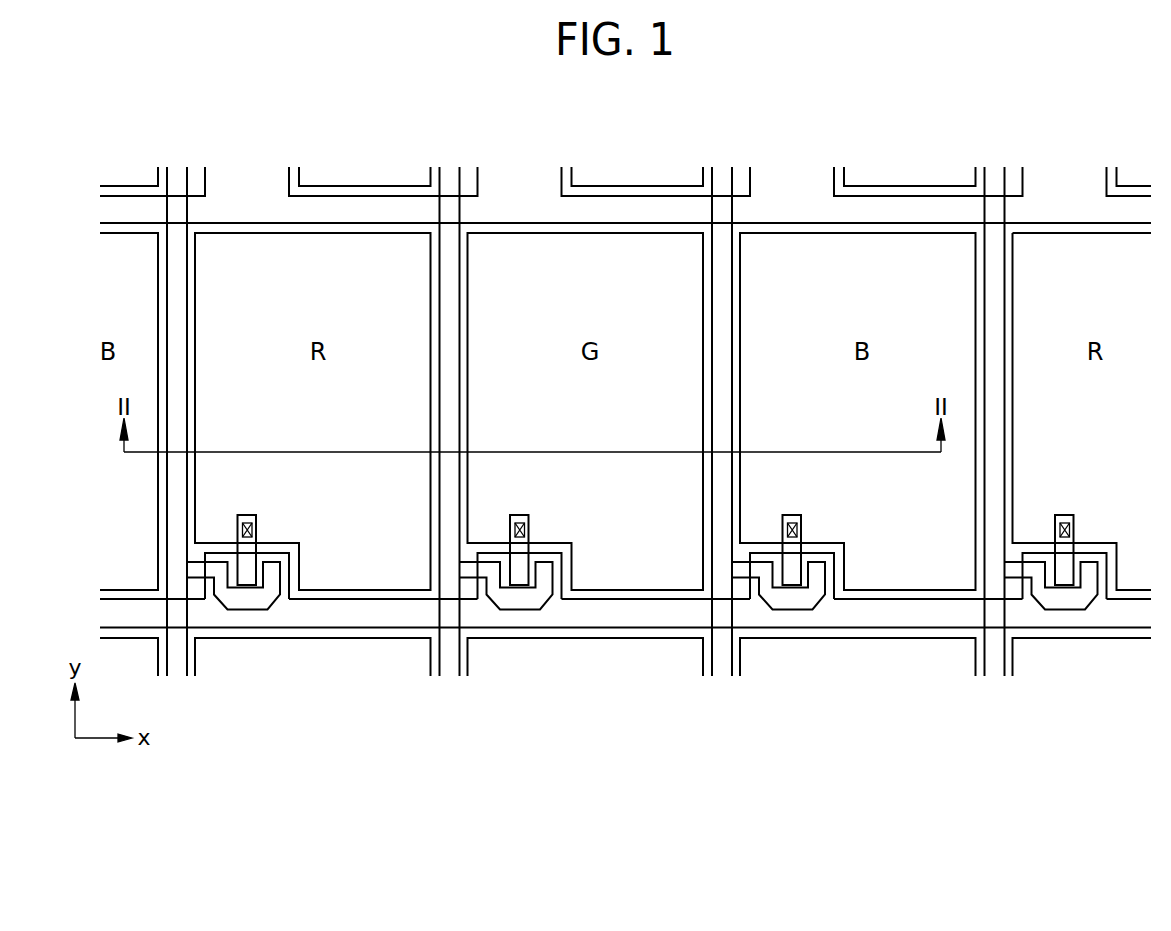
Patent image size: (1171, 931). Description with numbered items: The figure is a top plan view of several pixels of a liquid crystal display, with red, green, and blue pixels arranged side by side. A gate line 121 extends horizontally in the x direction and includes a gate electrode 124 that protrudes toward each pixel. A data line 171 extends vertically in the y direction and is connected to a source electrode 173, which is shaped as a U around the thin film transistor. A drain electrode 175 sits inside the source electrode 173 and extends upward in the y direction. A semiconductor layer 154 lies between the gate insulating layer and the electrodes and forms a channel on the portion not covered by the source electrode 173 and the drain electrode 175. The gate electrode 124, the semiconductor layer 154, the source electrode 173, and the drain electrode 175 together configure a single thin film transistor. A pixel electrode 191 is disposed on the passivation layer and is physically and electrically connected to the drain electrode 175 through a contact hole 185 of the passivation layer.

The gate line 121 is at (334, 631).
The gate electrode 124 is at (290, 578).
The semiconductor layer 154 is at (268, 590).
The data line 171 is at (168, 352).
The source electrode 173 is at (247, 610).
The drain electrode 175 is at (258, 535).
The contact hole 185 is at (254, 527).
The pixel electrode 191 is at (197, 300).